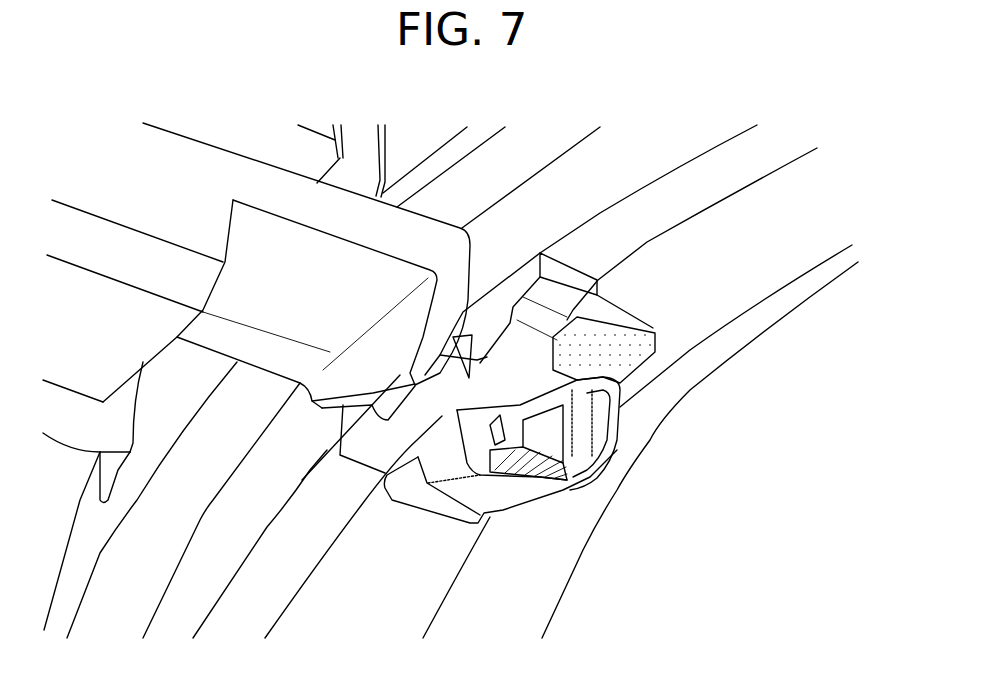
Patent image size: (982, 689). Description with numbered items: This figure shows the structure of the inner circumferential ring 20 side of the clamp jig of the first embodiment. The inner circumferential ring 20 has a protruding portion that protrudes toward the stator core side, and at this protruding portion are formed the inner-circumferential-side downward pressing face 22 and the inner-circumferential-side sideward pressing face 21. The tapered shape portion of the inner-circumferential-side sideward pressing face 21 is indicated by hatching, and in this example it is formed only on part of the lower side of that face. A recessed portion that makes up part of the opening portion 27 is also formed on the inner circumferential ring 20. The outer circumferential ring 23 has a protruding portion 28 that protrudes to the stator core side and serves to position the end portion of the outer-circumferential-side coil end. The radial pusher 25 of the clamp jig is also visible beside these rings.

The inner circumferential ring 20 is at (675, 318).
The inner-circumferential-side sideward pressing face 21 is at (509, 475).
The inner-circumferential-side downward pressing face 22 is at (593, 340).
The outer circumferential ring 23 is at (613, 232).
The radial pusher 25 is at (178, 160).
The opening portion 27 is at (490, 403).
The protruding portion 28 is at (487, 290).